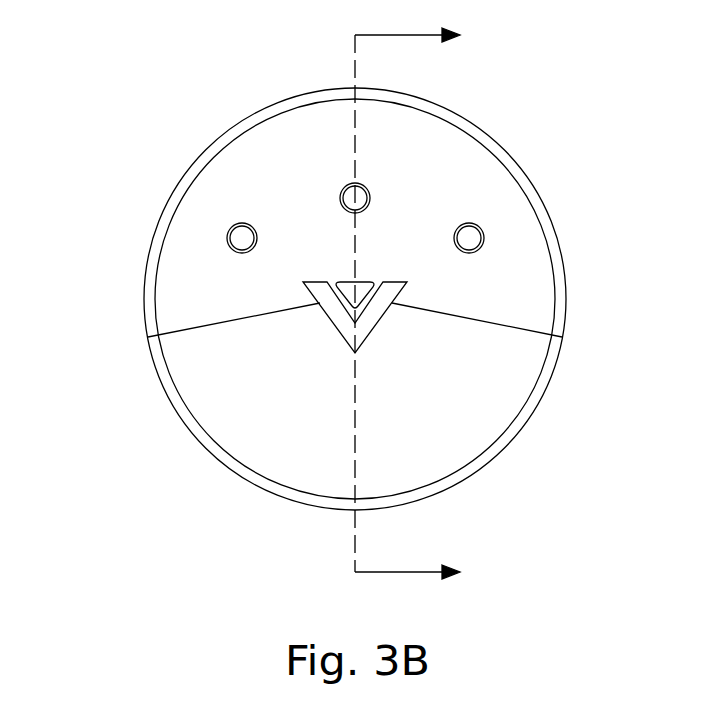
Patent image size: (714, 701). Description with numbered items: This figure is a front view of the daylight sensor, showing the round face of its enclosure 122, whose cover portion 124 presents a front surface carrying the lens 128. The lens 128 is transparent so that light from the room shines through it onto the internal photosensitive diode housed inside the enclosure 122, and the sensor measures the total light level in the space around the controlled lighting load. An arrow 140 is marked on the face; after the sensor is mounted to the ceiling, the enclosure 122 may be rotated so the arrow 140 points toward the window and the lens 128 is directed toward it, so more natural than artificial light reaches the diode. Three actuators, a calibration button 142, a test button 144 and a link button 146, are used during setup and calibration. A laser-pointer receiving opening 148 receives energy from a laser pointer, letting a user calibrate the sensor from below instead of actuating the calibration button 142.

The enclosure 122 is at (233, 190).
The cover portion 124 is at (320, 254).
The lens 128 is at (301, 394).
The arrow 140 is at (372, 322).
The calibration button 142 is at (243, 236).
The test button 144 is at (345, 198).
The link button 146 is at (469, 238).
The laser-pointer receiving opening 148 is at (362, 287).